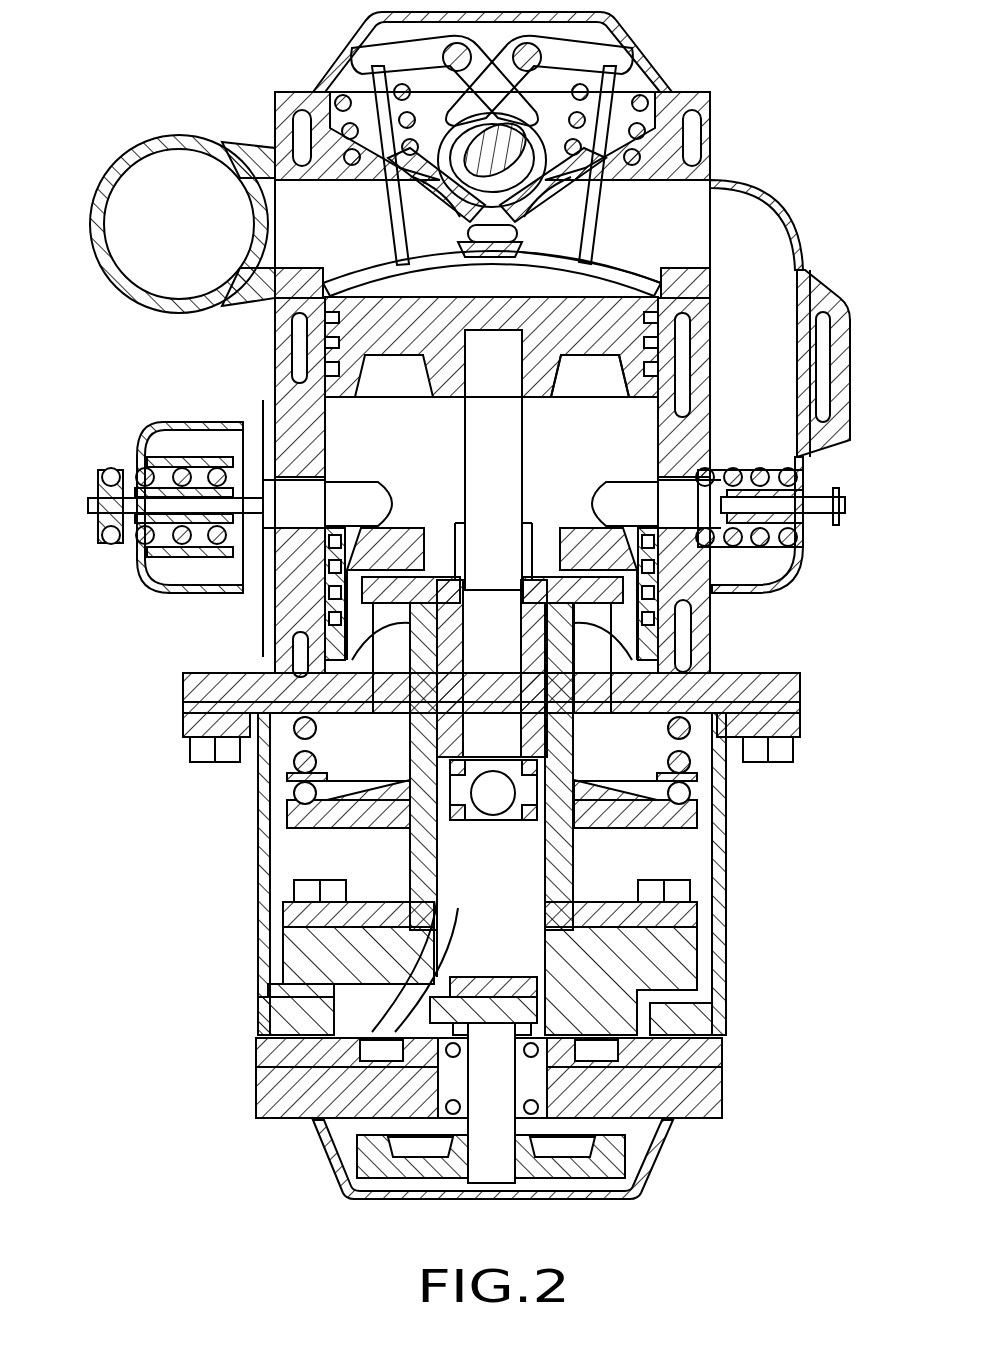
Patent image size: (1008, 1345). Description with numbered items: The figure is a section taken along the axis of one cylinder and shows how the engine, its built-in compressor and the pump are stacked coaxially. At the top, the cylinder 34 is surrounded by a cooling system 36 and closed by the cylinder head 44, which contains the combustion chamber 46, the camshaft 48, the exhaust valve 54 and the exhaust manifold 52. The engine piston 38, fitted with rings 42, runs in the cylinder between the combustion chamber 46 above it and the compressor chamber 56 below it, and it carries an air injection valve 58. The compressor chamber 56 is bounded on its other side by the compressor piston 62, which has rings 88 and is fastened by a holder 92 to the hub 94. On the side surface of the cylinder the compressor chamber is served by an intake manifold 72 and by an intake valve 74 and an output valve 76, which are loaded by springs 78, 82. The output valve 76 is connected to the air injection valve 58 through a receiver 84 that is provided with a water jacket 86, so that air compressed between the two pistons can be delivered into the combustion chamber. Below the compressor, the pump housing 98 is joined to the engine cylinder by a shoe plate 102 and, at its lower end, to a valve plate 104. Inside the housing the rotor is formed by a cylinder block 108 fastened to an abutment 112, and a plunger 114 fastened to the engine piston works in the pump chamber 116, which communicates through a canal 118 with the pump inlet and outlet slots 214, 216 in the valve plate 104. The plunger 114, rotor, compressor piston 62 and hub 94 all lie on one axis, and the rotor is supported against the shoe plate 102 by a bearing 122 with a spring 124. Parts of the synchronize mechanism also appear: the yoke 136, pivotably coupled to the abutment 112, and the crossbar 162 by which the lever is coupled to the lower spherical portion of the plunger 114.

The cylinder 34 is at (700, 335).
The cooling system 36 is at (690, 386).
The piston 38 is at (545, 300).
The rings 42 is at (620, 400).
The cylinder head 44 is at (285, 126).
The combustion chamber 46 is at (405, 282).
The camshaft 48 is at (566, 190).
The exhaust manifold 52 is at (152, 146).
The exhaust valve 54 is at (394, 216).
The compressor chamber 56 is at (330, 440).
The air injection valve 58 is at (588, 249).
The piston 62 is at (555, 553).
The intake manifold 72 is at (170, 424).
The intake valve 74 is at (268, 507).
The output valve 76 is at (700, 508).
The spring 78 is at (112, 546).
The spring 82 is at (747, 470).
The receiver 84 is at (762, 182).
The water jacket 86 is at (805, 300).
The rings 88 is at (290, 650).
The holder 92 is at (480, 600).
The hub 94 is at (536, 684).
The housing 98 is at (258, 882).
The shoe plate 102 is at (183, 706).
The valve plate 104 is at (285, 1118).
The cylinder block 108 is at (574, 846).
The abutment 112 is at (692, 943).
The plunger 114 is at (470, 424).
The pump chamber 116 is at (412, 858).
The canal 118 is at (290, 962).
The bearing 122 is at (690, 797).
The spring 124 is at (668, 730).
The yoke 136 is at (499, 987).
The crossbar 162 is at (494, 816).
The pump inlet slot 214 is at (605, 1050).
The pump outlet slot 216 is at (372, 1050).